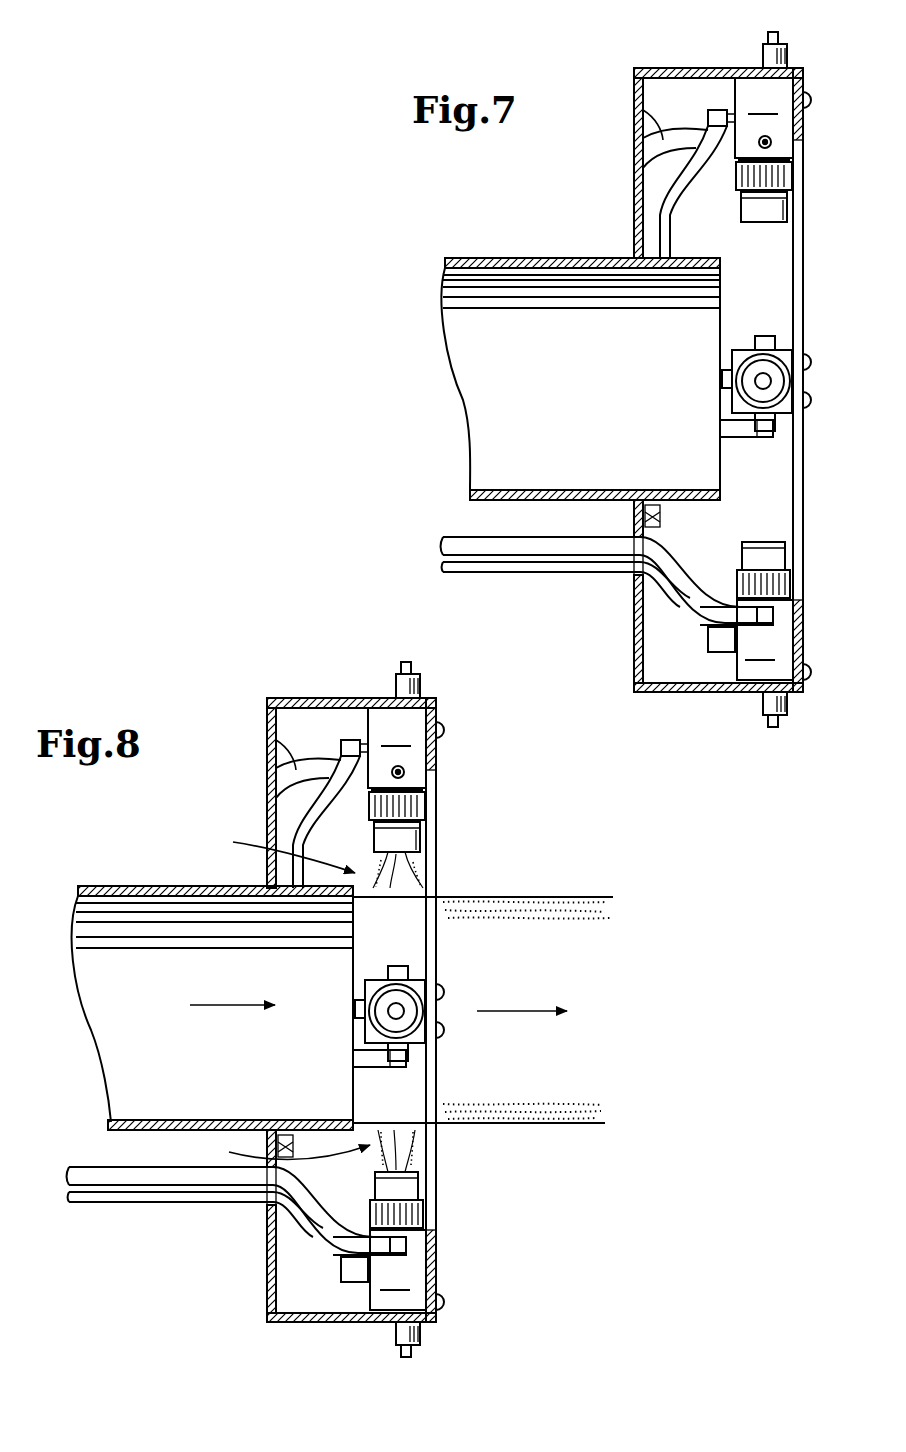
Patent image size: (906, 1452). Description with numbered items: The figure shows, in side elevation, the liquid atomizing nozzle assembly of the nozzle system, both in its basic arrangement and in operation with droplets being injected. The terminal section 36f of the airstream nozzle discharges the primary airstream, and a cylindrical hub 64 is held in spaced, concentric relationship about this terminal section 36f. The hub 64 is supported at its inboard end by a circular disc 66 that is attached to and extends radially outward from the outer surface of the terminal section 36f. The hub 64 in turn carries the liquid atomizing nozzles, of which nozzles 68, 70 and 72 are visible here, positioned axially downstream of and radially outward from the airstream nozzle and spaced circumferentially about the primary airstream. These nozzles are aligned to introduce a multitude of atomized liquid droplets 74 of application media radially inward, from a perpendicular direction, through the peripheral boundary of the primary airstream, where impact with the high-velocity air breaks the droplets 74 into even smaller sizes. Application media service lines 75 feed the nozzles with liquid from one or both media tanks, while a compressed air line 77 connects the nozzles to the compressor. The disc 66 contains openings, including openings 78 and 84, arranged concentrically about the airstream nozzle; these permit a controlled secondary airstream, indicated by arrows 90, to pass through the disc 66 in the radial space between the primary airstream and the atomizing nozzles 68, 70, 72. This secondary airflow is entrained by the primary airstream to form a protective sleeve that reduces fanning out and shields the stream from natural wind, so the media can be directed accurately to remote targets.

In FIG. 7, the terminal section of the airstream nozzle 36f is at (515, 258).
In FIG. 8, the terminal section of the airstream nozzle 36f is at (342, 997).
In FIG. 7, the cylindrical hub 64 is at (693, 68).
In FIG. 8, the cylindrical hub 64 is at (355, 1002).
In FIG. 7, the circular disc 66 is at (638, 140).
In FIG. 8, the circular disc 66 is at (270, 775).
In FIG. 7, the liquid atomizing nozzle 68 is at (750, 611).
In FIG. 8, the liquid atomizing nozzle 68 is at (383, 1220).
In FIG. 7, the liquid atomizing nozzle 70 is at (783, 350).
In FIG. 8, the liquid atomizing nozzle 70 is at (389, 993).
In FIG. 7, the liquid atomizing nozzle 72 is at (750, 150).
In FIG. 8, the liquid atomizing nozzle 72 is at (383, 780).
In FIG. 8, the atomized liquid droplets 74 is at (433, 868).
In FIG. 7, the application media service line 75 is at (637, 100).
In FIG. 8, the application media service line 75 is at (196, 982).
In FIG. 7, the compressed air line 77 is at (693, 180).
In FIG. 8, the compressed air line 77 is at (236, 1004).
In FIG. 7, the opening 78 is at (637, 197).
In FIG. 8, the opening 78 is at (246, 841).
In FIG. 7, the opening 84 is at (628, 578).
In FIG. 8, the opening 84 is at (300, 1232).
In FIG. 8, the arrows indicating secondary airstream 90 is at (282, 998).